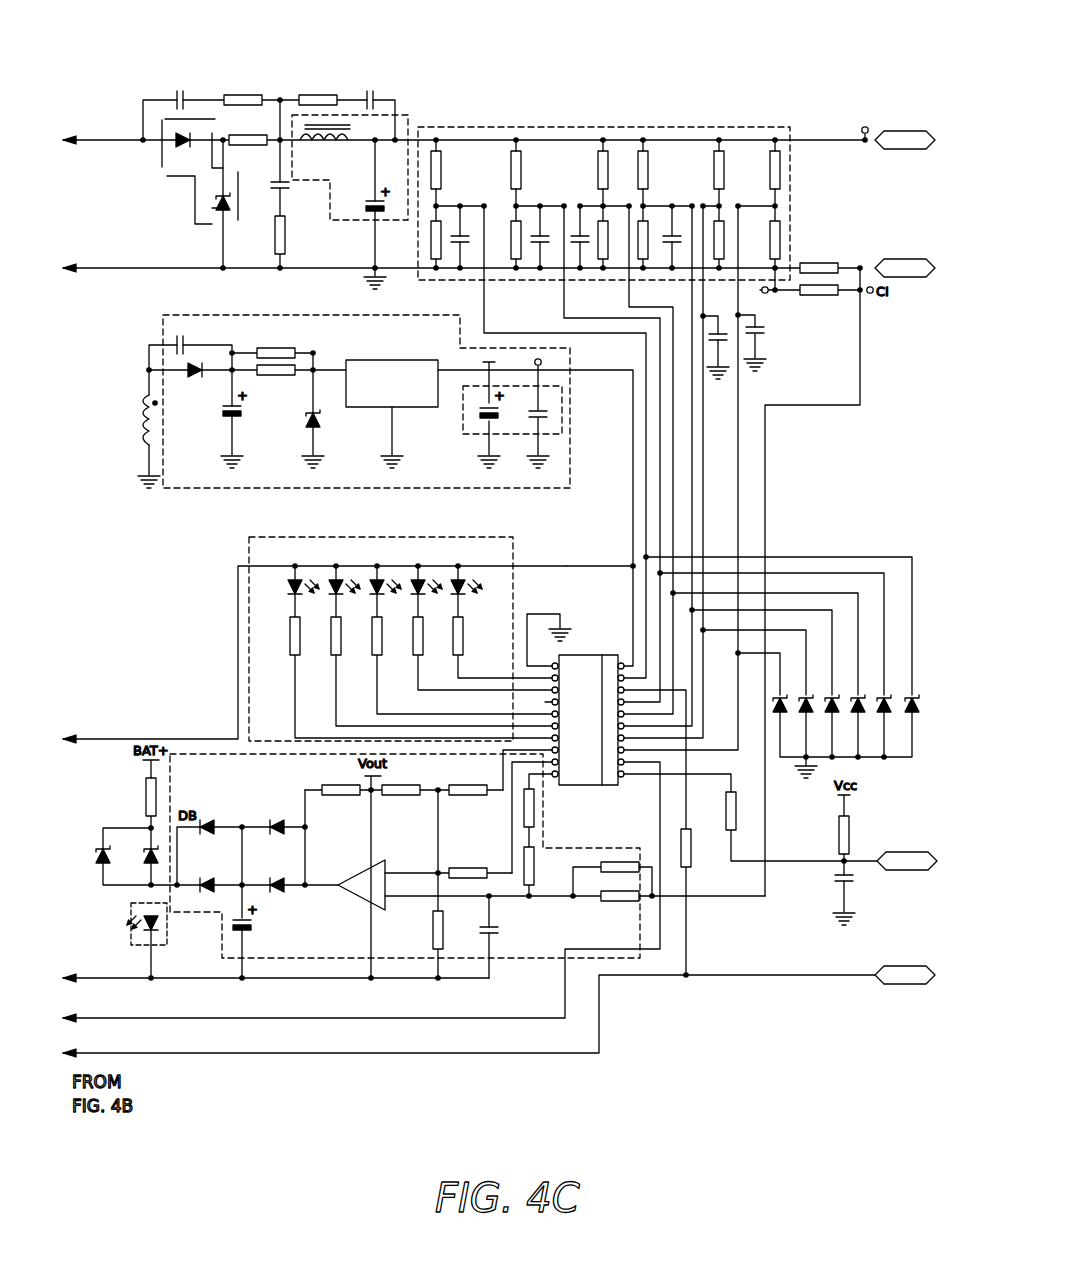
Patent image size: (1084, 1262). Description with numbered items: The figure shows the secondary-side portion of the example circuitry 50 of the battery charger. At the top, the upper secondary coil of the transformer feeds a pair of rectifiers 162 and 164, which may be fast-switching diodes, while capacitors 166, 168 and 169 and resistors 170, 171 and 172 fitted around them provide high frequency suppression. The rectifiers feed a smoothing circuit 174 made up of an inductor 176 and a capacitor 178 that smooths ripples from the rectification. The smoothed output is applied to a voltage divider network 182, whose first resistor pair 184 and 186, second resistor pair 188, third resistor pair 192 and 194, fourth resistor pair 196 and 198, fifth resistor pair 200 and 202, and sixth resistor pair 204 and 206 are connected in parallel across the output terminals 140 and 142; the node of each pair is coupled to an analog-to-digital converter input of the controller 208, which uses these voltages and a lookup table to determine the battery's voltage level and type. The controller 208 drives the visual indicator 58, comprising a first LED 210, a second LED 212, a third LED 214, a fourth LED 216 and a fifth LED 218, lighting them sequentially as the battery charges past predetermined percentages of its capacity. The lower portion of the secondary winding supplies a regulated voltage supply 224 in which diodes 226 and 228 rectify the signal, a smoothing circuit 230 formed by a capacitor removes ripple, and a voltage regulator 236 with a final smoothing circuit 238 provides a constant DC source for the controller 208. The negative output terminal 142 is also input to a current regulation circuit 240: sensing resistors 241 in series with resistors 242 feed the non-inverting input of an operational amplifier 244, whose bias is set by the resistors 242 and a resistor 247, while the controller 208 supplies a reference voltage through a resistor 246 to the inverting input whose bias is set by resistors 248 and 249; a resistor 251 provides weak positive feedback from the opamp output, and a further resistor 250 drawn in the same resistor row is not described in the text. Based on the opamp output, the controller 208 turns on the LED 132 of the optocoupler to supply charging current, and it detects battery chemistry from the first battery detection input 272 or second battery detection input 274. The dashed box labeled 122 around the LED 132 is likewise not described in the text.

The circuitry 50 is at (498, 70).
The visual indicator 58 is at (248, 640).
The light emitting diode 122 is at (133, 942).
The LED 132 is at (165, 928).
The output terminal 140 is at (900, 131).
The negative output terminal 142 is at (903, 259).
The rectifier 162 is at (176, 142).
The rectifier 164 is at (218, 210).
The capacitor 166 is at (192, 95).
The capacitor 168 is at (288, 215).
The capacitor 169 is at (378, 95).
The resistor 170 is at (318, 95).
The resistor 171 is at (243, 95).
The resistor 172 is at (272, 190).
The smoothing circuit 174 is at (410, 112).
The inductor 176 is at (335, 142).
The capacitor 178 is at (368, 215).
The voltage divider network 182 is at (587, 124).
The first resistor pair resistor 184 is at (440, 160).
The first resistor pair resistor 186 is at (432, 232).
The second resistor pair resistor 188 is at (520, 160).
The third resistor pair resistor 192 is at (608, 160).
The third resistor pair resistor 194 is at (610, 255).
The fourth resistor pair resistor 196 is at (648, 160).
The fourth resistor pair resistor 198 is at (650, 255).
The fifth resistor pair resistor 200 is at (724, 160).
The fifth resistor pair resistor 202 is at (726, 235).
The sixth resistor pair resistor 204 is at (782, 168).
The sixth resistor pair resistor 206 is at (782, 235).
The controller 208 is at (584, 652).
The first LED 210 is at (285, 595).
The second LED 212 is at (326, 595).
The third LED 214 is at (368, 595).
The fourth LED 216 is at (408, 595).
The fifth LED 218 is at (450, 595).
The regulated voltage supply 224 is at (245, 312).
The diode 226 is at (195, 342).
The diode 228 is at (302, 425).
The smoothing circuit 230 is at (222, 415).
The voltage regulator 236 is at (395, 358).
The final smoothing circuit 238 is at (565, 408).
The current regulation circuit 240 is at (205, 752).
The sensing resistors 241 is at (815, 262).
The resistors 242 is at (618, 860).
The operational amplifier 244 is at (375, 860).
The resistor 246 is at (466, 867).
The resistor 247 is at (522, 810).
The resistor 248 is at (401, 796).
The resistor 249 is at (432, 928).
The resistor 250 is at (465, 784).
The resistor 251 is at (338, 784).
The first battery detection input 272 is at (905, 872).
The second battery detection input 274 is at (905, 985).